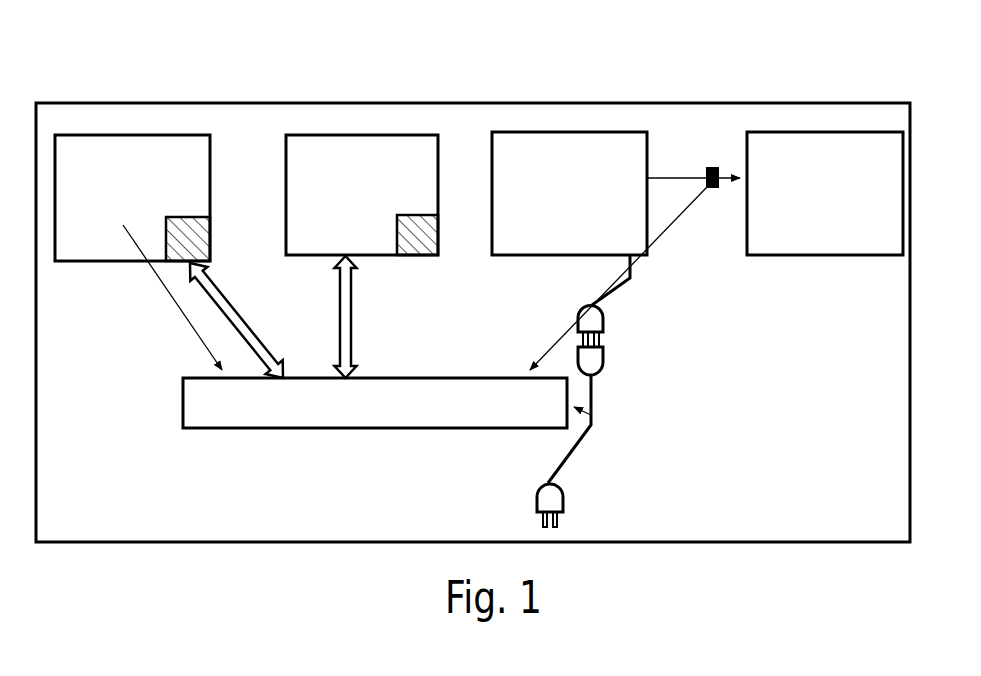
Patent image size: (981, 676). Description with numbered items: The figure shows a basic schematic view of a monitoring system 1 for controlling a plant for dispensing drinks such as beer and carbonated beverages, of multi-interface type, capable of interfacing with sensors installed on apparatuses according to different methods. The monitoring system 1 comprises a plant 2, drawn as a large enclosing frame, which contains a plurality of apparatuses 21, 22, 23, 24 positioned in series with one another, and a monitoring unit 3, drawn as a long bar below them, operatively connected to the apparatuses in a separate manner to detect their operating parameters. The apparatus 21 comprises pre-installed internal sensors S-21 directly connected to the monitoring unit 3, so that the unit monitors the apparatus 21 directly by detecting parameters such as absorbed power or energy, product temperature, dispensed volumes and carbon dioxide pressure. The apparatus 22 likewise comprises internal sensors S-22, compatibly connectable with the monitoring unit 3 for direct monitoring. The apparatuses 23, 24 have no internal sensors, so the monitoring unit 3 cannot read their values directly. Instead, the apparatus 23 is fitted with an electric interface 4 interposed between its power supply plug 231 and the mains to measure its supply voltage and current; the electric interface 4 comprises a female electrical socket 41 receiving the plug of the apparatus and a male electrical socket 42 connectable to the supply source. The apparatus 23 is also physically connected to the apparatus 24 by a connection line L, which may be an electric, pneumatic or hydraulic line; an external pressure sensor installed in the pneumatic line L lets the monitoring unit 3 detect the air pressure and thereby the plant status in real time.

The monitoring system 1 is at (590, 52).
The plant 2 is at (317, 85).
The monitoring unit 3 is at (345, 412).
The electric interface 4 is at (604, 437).
The apparatus 21 is at (132, 198).
The apparatus 22 is at (362, 195).
The apparatus 23 is at (569, 193).
The apparatus 24 is at (825, 193).
The female electrical socket 41 is at (592, 363).
The male electrical socket 42 is at (556, 497).
The power supply plug 231 is at (590, 321).
The connection line L is at (675, 165).
The internal sensors S-21 is at (204, 239).
The internal sensors S-22 is at (410, 258).